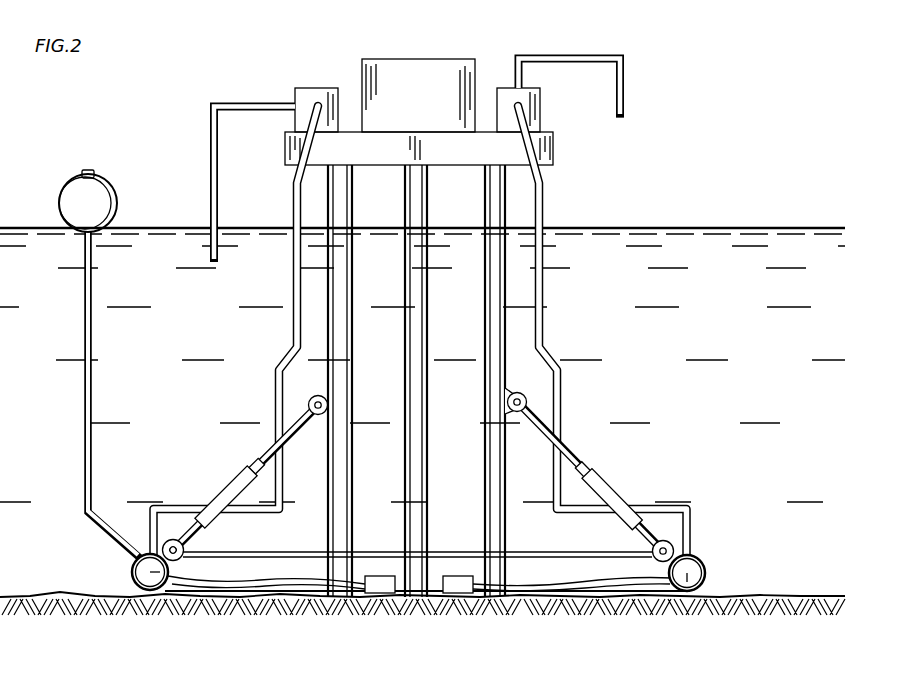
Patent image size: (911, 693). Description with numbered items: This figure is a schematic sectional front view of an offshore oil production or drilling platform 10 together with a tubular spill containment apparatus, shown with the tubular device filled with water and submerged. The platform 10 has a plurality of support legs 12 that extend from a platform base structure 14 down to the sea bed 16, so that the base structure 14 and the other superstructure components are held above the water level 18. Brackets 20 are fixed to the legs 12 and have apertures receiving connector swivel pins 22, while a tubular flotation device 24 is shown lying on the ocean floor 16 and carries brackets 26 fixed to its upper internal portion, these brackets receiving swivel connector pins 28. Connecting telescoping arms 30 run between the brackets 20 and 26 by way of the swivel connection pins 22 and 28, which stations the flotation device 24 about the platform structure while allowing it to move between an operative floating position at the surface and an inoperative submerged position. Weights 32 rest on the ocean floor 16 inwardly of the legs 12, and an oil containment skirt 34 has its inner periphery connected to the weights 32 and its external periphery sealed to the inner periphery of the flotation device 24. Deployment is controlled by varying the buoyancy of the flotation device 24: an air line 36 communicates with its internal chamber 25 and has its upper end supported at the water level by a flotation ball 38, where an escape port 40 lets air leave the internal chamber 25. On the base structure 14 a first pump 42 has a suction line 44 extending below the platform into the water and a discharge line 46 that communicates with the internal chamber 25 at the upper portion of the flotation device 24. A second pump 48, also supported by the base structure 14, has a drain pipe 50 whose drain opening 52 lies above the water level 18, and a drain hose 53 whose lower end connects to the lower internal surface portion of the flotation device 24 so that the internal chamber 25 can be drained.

The offshore platform 10 is at (430, 59).
The support legs 12 is at (428, 275).
The platform base structure 14 is at (553, 150).
The sea bed 16 is at (827, 596).
The water level 18 is at (627, 228).
The brackets 20 is at (508, 388).
The connector swivel pins 22 is at (525, 402).
The tubular flotation device 24 is at (132, 572).
The internal chamber 25 is at (172, 572).
The brackets 26 is at (670, 540).
The swivel connector pins 28 is at (706, 228).
The connecting telescoping arms 30 is at (228, 480).
The weights 32 is at (375, 576).
The oil containment skirt 34 is at (282, 599).
The air line 36 is at (85, 404).
The flotation ball 38 is at (116, 200).
The escape port 40 is at (86, 170).
The first pump 42 is at (318, 88).
The suction line 44 is at (210, 166).
The discharge line 46 is at (293, 265).
The second pump 48 is at (528, 106).
The drain pipe 50 is at (596, 55).
The drain opening 52 is at (624, 118).
The drain hose 53 is at (545, 266).